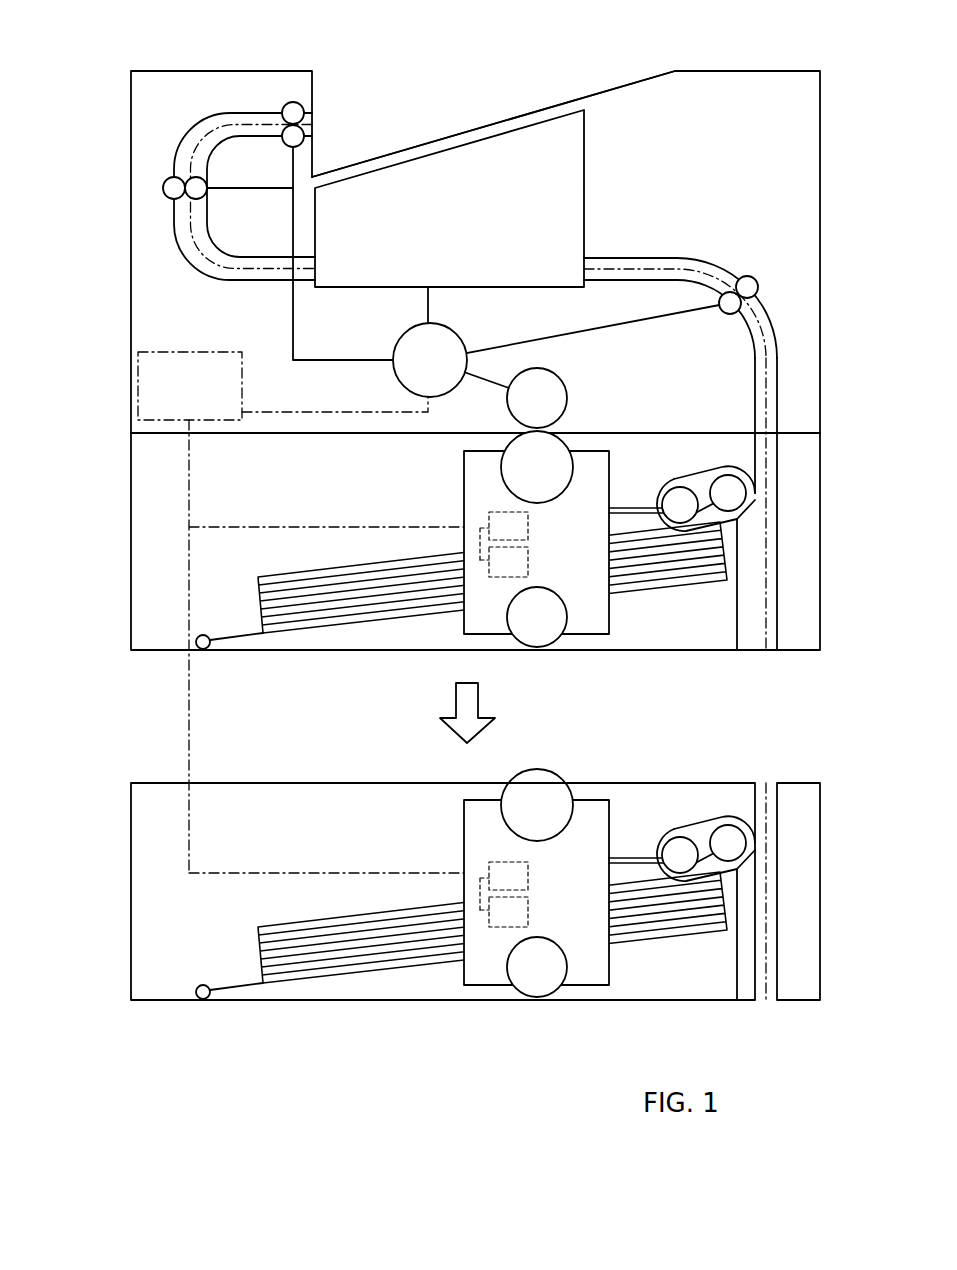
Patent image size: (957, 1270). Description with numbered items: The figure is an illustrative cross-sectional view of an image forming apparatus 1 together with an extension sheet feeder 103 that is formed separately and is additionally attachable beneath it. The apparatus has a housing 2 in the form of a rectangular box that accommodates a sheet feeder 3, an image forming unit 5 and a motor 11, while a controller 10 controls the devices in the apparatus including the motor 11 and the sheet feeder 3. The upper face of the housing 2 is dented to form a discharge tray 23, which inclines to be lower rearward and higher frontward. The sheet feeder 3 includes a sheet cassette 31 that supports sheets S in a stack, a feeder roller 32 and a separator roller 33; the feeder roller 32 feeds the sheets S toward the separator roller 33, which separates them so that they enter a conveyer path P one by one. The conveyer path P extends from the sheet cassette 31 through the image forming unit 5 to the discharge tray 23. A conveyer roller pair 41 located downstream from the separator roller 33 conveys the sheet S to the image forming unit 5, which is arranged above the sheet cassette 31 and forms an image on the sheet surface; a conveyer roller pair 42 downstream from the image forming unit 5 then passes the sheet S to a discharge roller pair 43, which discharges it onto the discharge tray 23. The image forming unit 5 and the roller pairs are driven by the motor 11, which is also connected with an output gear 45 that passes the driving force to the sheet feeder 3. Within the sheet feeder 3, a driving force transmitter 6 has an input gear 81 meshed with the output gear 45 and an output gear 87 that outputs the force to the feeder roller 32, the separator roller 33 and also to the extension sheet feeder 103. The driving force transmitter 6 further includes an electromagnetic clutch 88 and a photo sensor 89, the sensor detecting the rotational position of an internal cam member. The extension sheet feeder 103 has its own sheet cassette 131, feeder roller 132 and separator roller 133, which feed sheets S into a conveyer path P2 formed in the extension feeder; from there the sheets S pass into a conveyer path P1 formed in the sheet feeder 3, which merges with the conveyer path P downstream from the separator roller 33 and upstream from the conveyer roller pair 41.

The image forming apparatus 1 is at (392, 63).
The housing 2 is at (131, 328).
The sheet feeder 3 is at (131, 517).
The image forming unit 5 is at (424, 247).
The driving force transmitter 6 is at (462, 503).
The controller 10 is at (205, 397).
The motor 11 is at (392, 373).
The discharge tray 23 is at (462, 131).
The sheet cassette 31 is at (131, 612).
The feeder roller 32 is at (671, 490).
The separator roller 33 is at (726, 477).
The conveyer roller pair 41 is at (751, 276).
The conveyer roller pair 42 is at (174, 201).
The discharge roller pair 43 is at (283, 109).
The output gear 45 is at (564, 380).
The input gear 81 is at (501, 465).
The output gear 87 is at (558, 643).
The electromagnetic clutch 88 is at (520, 539).
The photo sensor 89 is at (520, 574).
The extension sheet feeder 103 is at (131, 848).
The sheet cassette 131 is at (131, 943).
The feeder roller 132 is at (670, 840).
The separator roller 133 is at (725, 828).
The conveyer path P is at (226, 265).
The conveyer path P1 is at (770, 588).
The conveyer path P2 is at (770, 804).
The sheet S is at (281, 580).